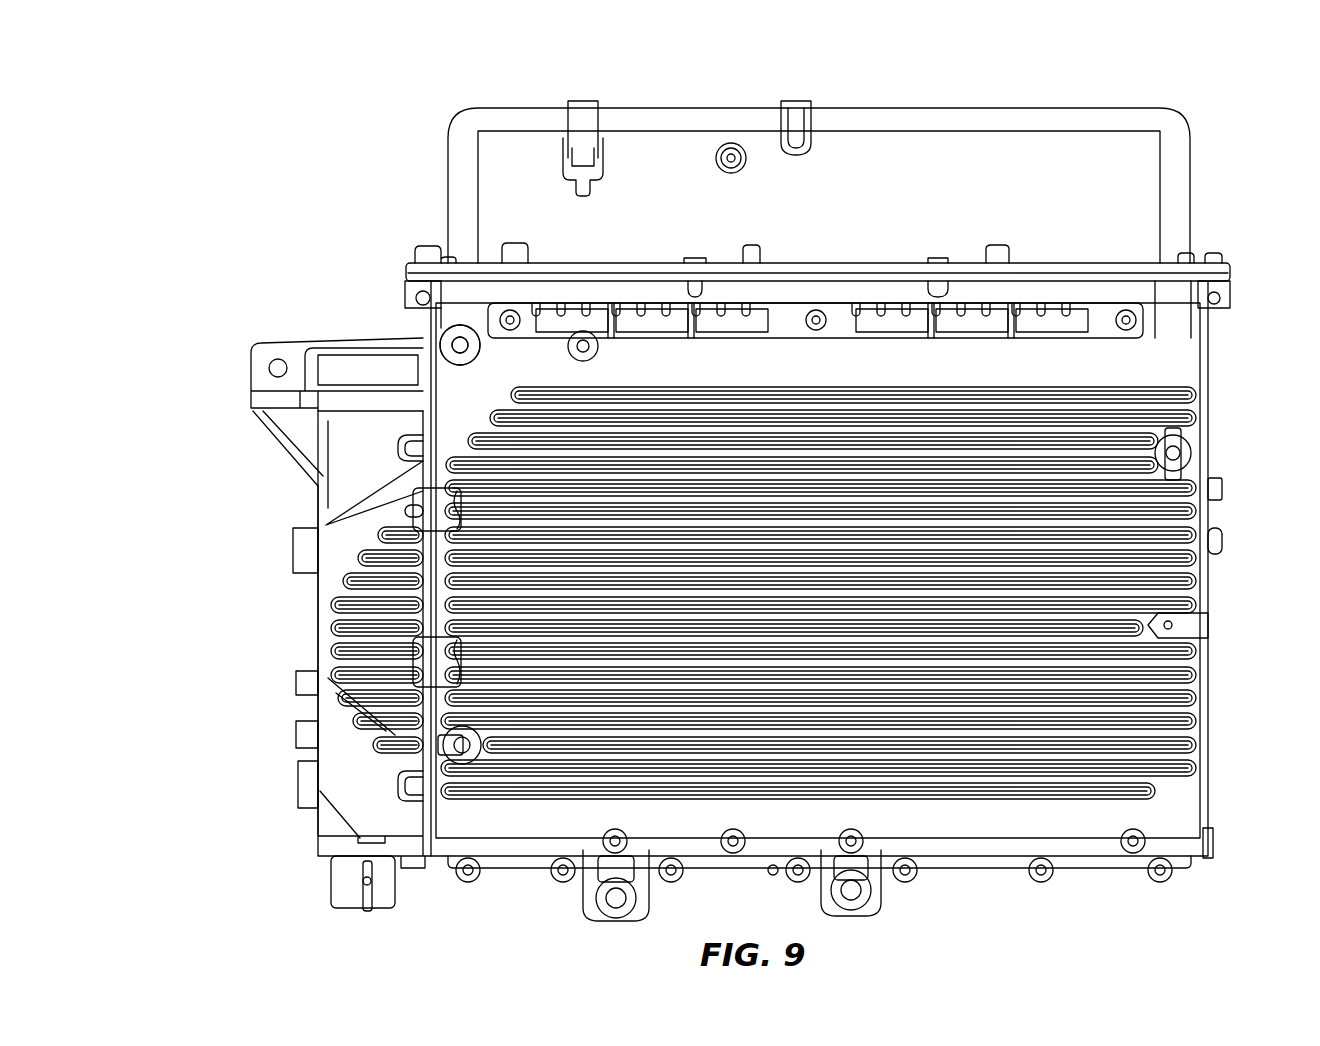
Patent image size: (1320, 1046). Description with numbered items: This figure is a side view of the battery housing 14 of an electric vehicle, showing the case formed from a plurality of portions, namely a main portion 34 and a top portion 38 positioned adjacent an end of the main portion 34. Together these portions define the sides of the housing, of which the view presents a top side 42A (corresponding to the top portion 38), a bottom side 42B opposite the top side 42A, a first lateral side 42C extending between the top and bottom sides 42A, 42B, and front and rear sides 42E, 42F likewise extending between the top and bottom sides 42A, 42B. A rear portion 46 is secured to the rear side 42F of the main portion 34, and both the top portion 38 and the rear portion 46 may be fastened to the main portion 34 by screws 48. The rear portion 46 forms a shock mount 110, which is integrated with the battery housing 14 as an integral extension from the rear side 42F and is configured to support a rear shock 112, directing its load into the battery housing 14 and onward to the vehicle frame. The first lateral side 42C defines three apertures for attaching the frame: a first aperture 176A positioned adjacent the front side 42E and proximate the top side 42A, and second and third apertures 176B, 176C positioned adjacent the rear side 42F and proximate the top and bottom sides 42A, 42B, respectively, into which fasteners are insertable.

The battery housing 14 is at (340, 116).
The main portion 34 is at (1080, 408).
The top portion 38 is at (930, 157).
The top side 42A is at (1097, 100).
The bottom side 42B is at (990, 862).
The first lateral side 42C is at (1055, 680).
The front side 42E is at (1200, 582).
The rear side 42F is at (430, 585).
The rear portion 46 is at (350, 532).
The screws 48 is at (437, 243).
The shock mount 110 is at (228, 335).
The rear shock 112 is at (182, 375).
The first aperture 176A is at (1170, 446).
The second aperture 176B is at (455, 330).
The third aperture 176C is at (455, 737).